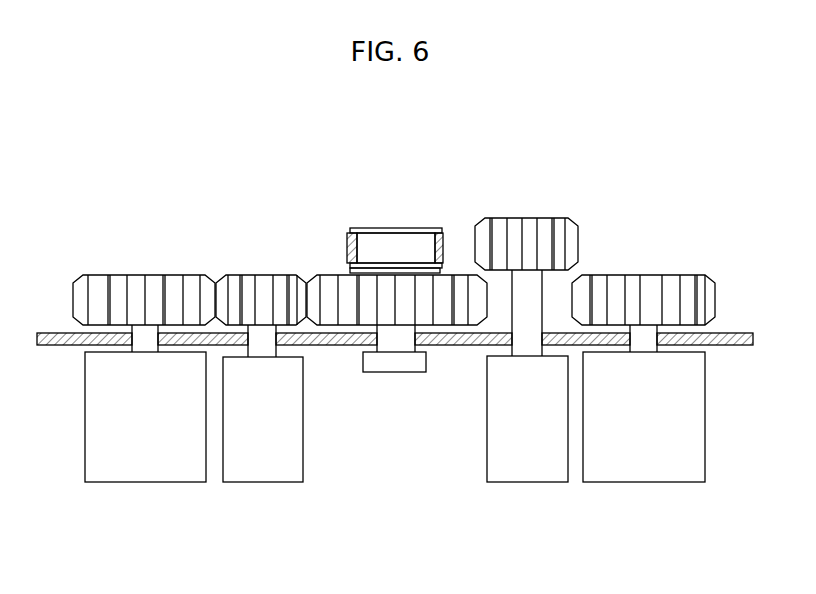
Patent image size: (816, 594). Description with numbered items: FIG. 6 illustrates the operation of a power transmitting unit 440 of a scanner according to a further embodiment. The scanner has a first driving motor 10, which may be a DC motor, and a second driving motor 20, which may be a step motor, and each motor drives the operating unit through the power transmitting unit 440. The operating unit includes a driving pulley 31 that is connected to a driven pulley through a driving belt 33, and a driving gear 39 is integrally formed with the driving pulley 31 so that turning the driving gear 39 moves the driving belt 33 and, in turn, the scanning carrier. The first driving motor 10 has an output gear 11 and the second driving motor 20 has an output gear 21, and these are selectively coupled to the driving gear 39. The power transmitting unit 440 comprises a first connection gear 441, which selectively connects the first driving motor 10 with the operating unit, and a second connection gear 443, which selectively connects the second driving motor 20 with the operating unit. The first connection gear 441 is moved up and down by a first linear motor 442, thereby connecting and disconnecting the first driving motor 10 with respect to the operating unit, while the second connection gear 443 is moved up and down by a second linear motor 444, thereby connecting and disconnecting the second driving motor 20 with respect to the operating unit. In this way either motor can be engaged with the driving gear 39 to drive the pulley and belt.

The power transmitting unit 440 is at (145, 202).
The output gear 11 is at (118, 283).
The first connection gear 441 is at (265, 281).
The driving gear 39 is at (332, 280).
The driving pulley 31 is at (420, 229).
The driving belt 33 is at (444, 246).
The second connection gear 443 is at (540, 223).
The output gear 21 is at (670, 281).
The first driving motor 10 is at (102, 476).
The first linear motor 442 is at (250, 476).
The second linear motor 444 is at (510, 472).
The second driving motor 20 is at (673, 474).